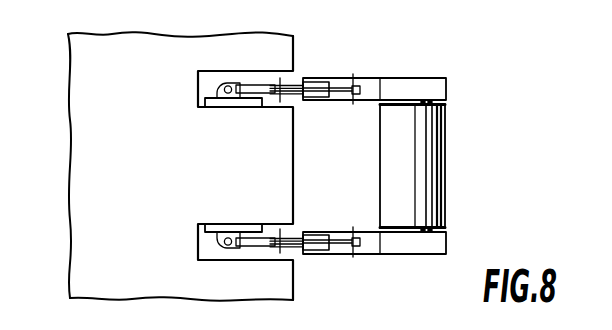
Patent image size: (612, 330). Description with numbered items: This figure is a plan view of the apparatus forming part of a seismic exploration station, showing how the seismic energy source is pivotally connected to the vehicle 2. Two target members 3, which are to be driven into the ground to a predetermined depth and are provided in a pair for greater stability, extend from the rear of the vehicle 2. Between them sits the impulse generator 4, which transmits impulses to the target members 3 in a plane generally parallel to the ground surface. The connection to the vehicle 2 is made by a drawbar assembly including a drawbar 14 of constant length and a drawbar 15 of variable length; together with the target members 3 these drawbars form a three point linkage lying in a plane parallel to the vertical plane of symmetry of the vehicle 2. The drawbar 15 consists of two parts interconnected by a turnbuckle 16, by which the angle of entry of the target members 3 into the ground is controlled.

The vehicle 2 is at (68, 159).
The target member 3 is at (370, 84).
The impulse generator 4 is at (384, 181).
The drawbar 14 is at (247, 243).
The drawbar 15 is at (350, 250).
The turnbuckle 16 is at (318, 250).